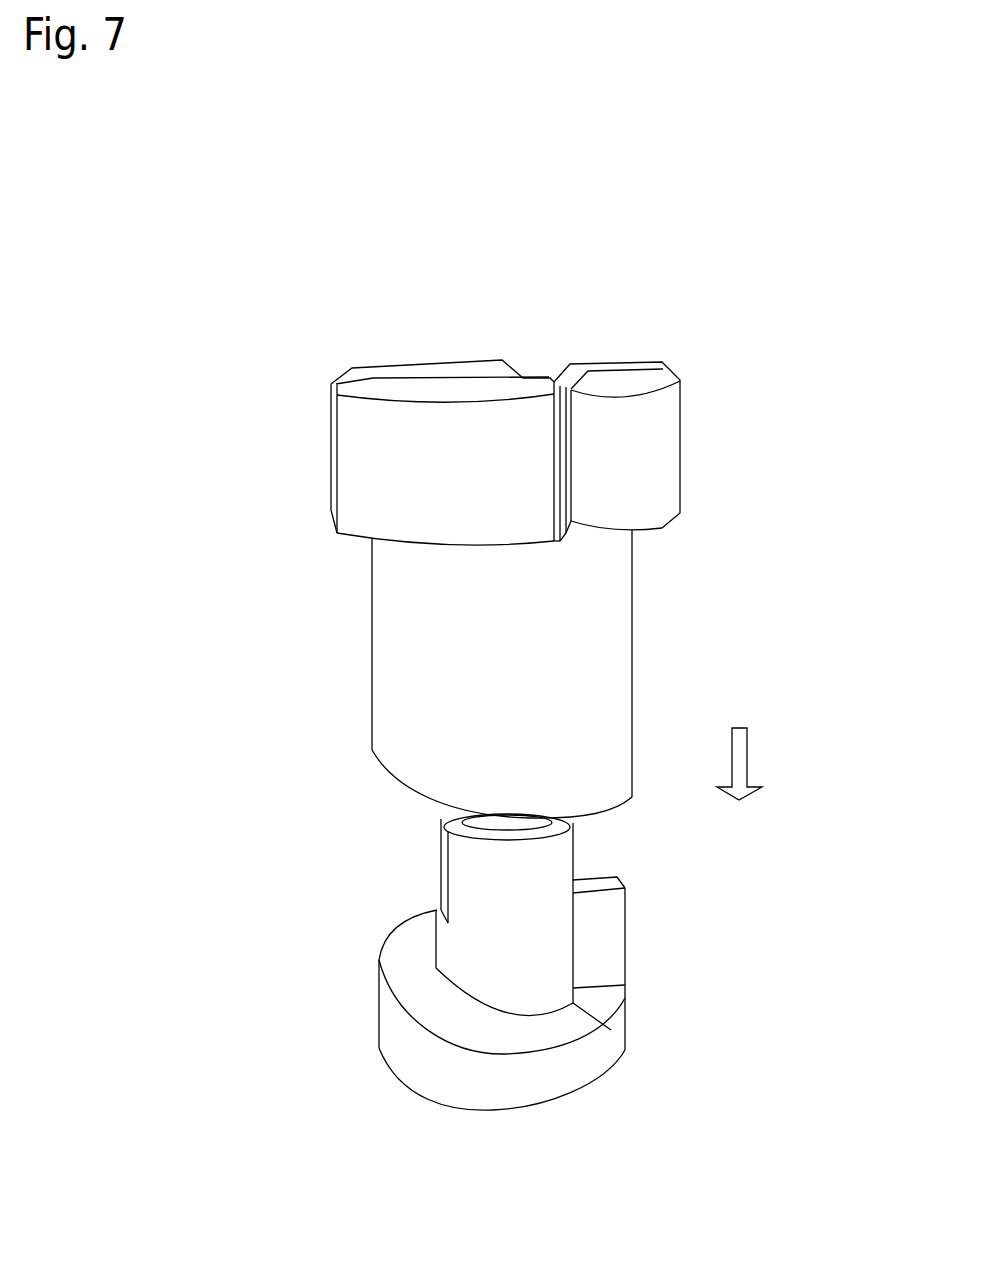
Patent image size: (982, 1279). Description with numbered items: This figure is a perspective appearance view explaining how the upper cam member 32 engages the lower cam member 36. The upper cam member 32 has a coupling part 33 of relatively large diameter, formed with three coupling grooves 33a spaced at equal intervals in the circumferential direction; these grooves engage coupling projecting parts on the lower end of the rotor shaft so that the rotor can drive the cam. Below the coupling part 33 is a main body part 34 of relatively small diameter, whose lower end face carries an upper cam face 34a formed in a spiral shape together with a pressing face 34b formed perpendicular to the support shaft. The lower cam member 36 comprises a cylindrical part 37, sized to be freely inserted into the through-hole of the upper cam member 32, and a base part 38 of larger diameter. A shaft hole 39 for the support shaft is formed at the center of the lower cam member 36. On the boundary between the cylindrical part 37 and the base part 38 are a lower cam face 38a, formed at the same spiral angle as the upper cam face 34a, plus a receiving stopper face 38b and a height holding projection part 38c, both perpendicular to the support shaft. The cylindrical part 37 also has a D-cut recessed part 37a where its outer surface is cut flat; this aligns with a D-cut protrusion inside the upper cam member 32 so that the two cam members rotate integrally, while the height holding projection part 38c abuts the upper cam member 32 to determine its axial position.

The upper cam member 32 is at (724, 530).
The coupling part 33 is at (660, 432).
The coupling groove 33a is at (537, 368).
The main body part 34 is at (622, 658).
The upper cam face 34a is at (413, 787).
The pressing face 34b is at (603, 815).
The lower cam member 36 is at (718, 963).
The cylindrical part 37 is at (496, 915).
The D-cut recessed part 37a is at (443, 873).
The base part 38 is at (572, 1067).
The lower cam face 38a is at (400, 965).
The receiving stopper face 38b is at (612, 1013).
The height holding projection part 38c is at (625, 883).
The shaft hole 39 is at (465, 840).